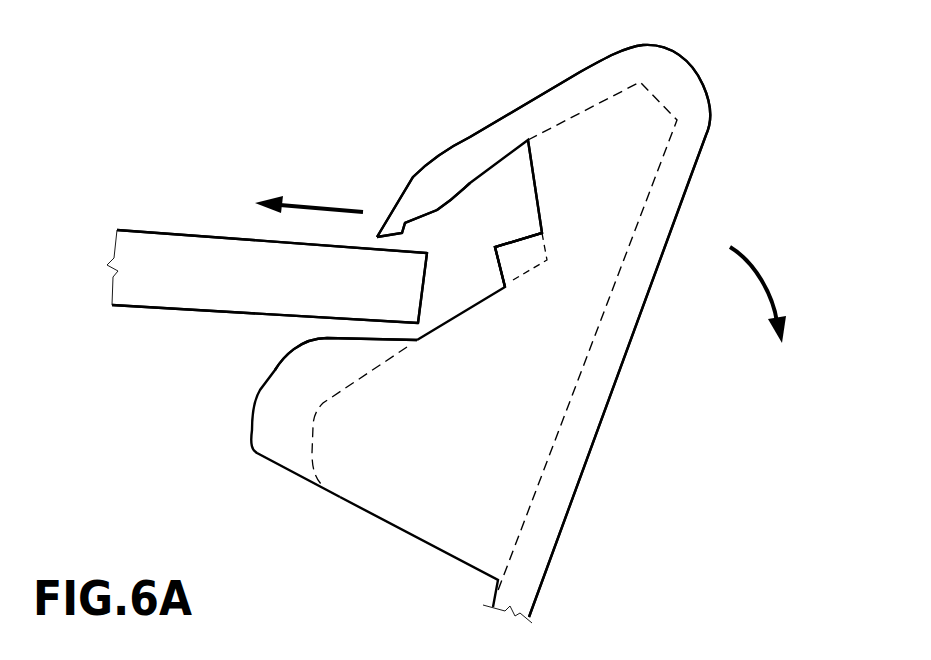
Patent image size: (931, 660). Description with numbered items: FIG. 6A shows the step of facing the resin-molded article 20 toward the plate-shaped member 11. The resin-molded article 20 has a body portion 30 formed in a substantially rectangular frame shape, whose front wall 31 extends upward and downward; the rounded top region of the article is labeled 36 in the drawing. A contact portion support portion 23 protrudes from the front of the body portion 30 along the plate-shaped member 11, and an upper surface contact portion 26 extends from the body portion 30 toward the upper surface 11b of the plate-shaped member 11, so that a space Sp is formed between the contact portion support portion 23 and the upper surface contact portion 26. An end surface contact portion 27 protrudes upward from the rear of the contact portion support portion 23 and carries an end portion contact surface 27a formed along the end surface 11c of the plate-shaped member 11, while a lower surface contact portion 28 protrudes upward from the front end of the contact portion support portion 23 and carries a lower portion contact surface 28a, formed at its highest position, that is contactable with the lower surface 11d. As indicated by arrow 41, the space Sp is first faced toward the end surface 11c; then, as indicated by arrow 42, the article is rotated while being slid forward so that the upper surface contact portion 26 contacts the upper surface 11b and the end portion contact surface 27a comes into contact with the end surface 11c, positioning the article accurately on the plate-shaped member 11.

The plate-shaped member 11 is at (110, 250).
The upper surface 11b is at (193, 233).
The end surface 11c is at (427, 300).
The lower surface 11d is at (128, 308).
The resin-molded article 20 is at (771, 79).
The contact portion support portion 23 is at (437, 488).
The upper surface contact portion 26 is at (395, 200).
The end surface contact portion 27 is at (523, 257).
The end portion contact surface 27a is at (498, 268).
The lower surface contact portion 28 is at (277, 427).
The lower portion contact surface 28a is at (320, 338).
The body portion 30 is at (588, 457).
The front wall 31 is at (625, 397).
The curved top portion 36 is at (562, 77).
The arrow 41 is at (315, 203).
The arrow 42 is at (758, 265).
The space Sp is at (487, 244).